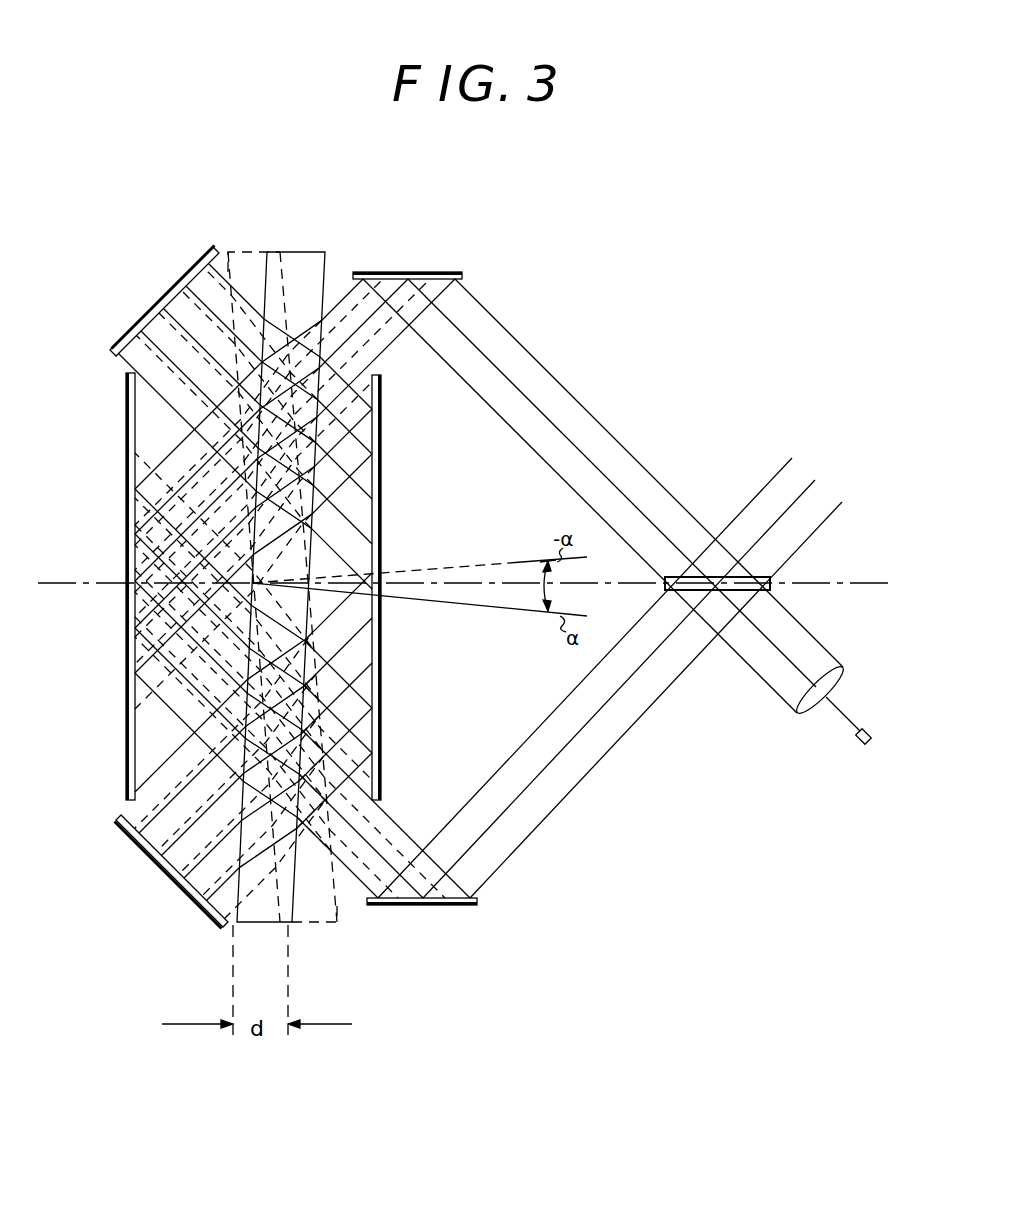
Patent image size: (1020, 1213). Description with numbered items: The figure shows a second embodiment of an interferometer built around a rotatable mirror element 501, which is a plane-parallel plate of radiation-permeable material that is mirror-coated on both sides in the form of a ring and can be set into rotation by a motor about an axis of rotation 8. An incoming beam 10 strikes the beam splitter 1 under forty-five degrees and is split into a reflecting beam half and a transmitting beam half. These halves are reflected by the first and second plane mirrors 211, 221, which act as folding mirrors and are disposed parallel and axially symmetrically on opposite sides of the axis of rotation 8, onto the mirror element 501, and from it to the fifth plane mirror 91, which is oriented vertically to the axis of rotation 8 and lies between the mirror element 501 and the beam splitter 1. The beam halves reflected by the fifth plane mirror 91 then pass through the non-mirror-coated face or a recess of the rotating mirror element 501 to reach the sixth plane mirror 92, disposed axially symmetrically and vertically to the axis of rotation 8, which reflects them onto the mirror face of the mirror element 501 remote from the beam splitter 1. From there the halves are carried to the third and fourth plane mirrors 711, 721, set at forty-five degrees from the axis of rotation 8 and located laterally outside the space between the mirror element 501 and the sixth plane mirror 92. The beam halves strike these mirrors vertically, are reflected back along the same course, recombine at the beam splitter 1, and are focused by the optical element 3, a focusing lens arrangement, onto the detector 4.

The beam splitter 1 is at (774, 582).
The optical element 3 is at (796, 716).
The detector 4 is at (872, 745).
The axis of rotation 8 is at (62, 581).
The beam 10 is at (808, 502).
The first plane mirror 211 is at (406, 268).
The second plane mirror 221 is at (445, 906).
The mirror element 501 is at (261, 258).
The third plane mirror 711 is at (168, 876).
The fourth plane mirror 721 is at (142, 320).
The fifth plane mirror 91 is at (384, 696).
The sixth plane mirror 92 is at (126, 718).